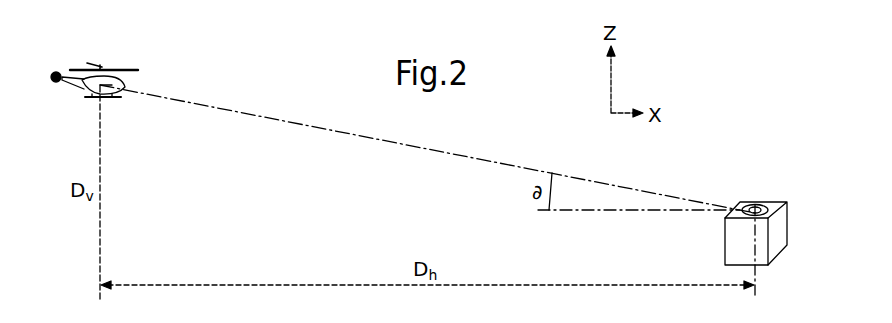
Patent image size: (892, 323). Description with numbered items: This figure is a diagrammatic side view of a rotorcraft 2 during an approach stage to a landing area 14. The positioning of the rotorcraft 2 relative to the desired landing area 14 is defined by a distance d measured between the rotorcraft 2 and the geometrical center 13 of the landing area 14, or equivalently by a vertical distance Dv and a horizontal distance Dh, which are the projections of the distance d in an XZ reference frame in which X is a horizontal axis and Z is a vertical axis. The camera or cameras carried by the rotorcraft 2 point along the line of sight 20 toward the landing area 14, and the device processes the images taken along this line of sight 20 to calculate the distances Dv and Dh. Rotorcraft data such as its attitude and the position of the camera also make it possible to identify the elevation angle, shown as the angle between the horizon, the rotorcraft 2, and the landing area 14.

The rotorcraft 2 is at (123, 68).
The line of sight 20 is at (236, 104).
The geometrical center 13 is at (753, 203).
The landing area 14 is at (767, 203).